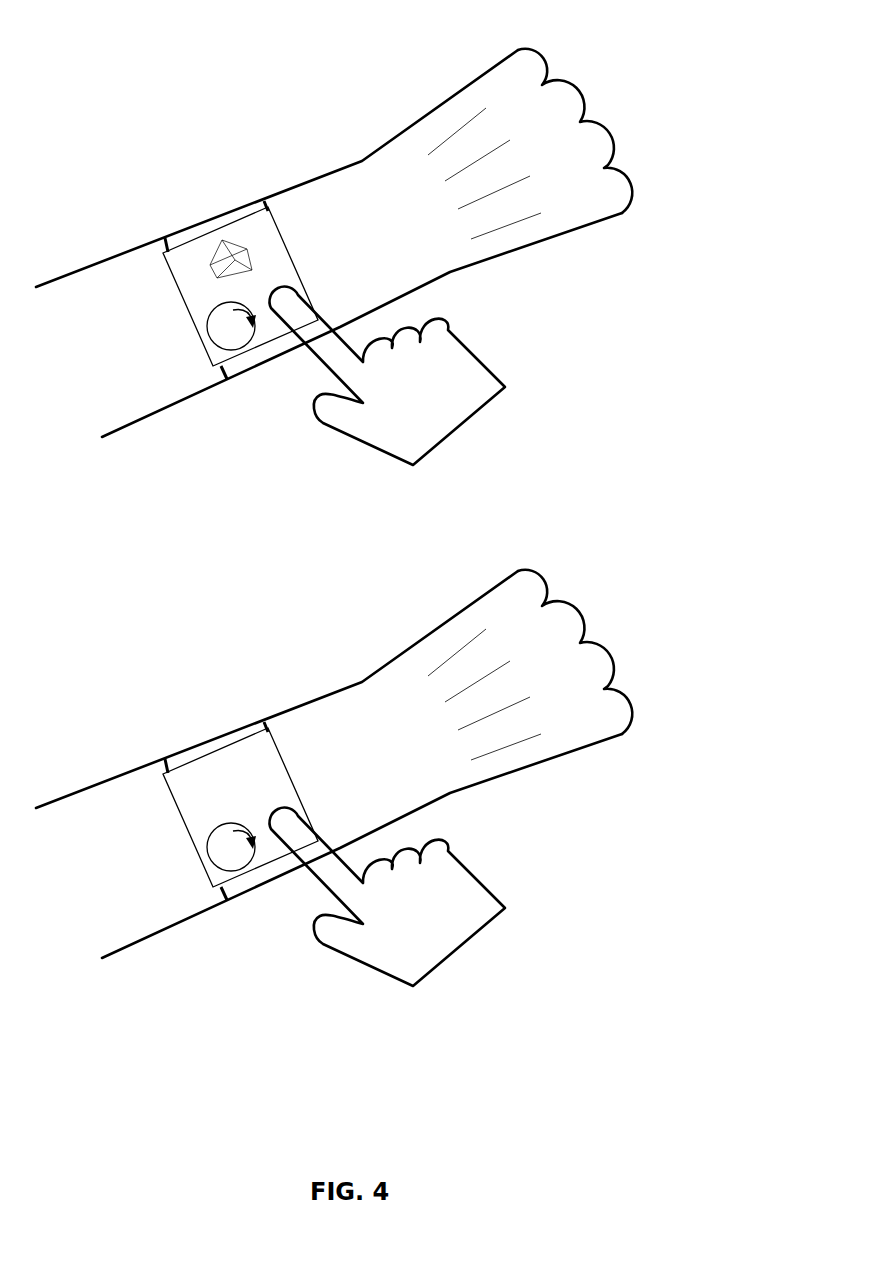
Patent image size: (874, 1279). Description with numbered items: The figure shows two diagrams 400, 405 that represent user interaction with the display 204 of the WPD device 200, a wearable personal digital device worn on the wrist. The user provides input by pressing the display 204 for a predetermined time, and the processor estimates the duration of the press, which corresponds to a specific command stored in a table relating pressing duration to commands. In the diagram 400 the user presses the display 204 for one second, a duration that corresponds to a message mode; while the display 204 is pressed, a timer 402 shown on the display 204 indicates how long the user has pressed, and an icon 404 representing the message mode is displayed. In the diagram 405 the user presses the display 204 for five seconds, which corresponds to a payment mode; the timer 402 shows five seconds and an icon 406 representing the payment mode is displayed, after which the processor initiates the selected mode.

The diagram 400 is at (720, 55).
The diagram 405 is at (720, 576).
The WPD device 200 is at (189, 314).
The display 204 is at (262, 226).
The timer 402 is at (226, 347).
The icon 404 is at (216, 245).
The icon 406 is at (216, 766).